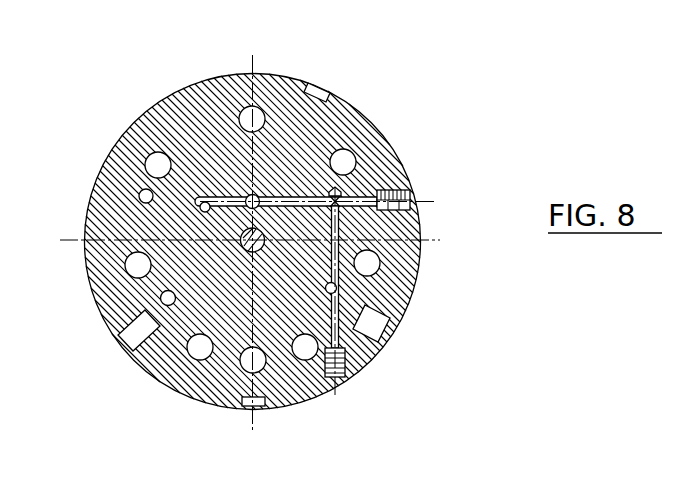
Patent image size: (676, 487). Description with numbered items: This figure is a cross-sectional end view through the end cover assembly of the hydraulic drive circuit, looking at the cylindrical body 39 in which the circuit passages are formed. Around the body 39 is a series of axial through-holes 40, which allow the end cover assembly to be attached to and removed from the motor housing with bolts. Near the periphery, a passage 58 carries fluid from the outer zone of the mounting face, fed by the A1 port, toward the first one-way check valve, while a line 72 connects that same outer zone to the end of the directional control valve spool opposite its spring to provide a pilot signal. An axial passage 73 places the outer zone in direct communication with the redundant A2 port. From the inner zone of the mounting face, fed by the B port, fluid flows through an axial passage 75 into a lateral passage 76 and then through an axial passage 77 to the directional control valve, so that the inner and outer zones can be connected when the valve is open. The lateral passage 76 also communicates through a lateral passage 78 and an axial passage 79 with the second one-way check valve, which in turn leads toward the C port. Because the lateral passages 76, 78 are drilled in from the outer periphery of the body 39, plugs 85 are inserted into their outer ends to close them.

The cylindrical body 39 is at (157, 118).
The axial through-holes 40 is at (250, 117).
The passage 58 is at (163, 299).
The line 72 is at (141, 194).
The axial passage 73 is at (241, 400).
The axial passage 75 is at (255, 193).
The lateral passage 76 is at (287, 195).
The axial passage 77 is at (201, 207).
The lateral passage 78 is at (338, 228).
The axial passage 79 is at (336, 291).
The plugs 85 is at (412, 200).